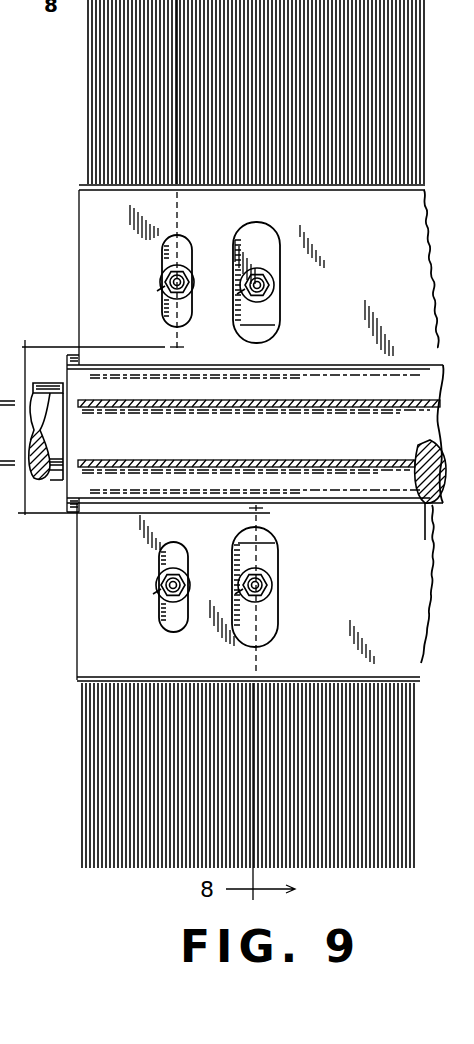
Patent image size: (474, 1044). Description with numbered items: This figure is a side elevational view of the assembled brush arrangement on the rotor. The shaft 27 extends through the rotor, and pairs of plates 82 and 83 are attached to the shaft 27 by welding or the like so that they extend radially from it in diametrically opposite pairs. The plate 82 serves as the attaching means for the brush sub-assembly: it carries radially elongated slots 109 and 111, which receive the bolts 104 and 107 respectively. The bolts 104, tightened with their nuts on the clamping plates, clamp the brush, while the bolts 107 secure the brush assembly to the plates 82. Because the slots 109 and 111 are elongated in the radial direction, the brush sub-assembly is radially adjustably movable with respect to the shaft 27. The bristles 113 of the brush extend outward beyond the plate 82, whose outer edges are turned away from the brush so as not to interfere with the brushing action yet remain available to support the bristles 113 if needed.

The shaft 27 is at (48, 393).
The plates 82 is at (96, 247).
The plates 83 is at (200, 461).
The bolts 104 is at (265, 286).
The bolts 107 is at (162, 292).
The radially elongated slots 109 is at (274, 243).
The radially elongated slots 111 is at (187, 246).
The bristles 113 is at (99, 96).